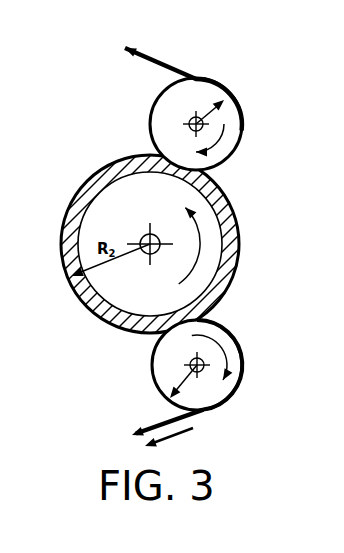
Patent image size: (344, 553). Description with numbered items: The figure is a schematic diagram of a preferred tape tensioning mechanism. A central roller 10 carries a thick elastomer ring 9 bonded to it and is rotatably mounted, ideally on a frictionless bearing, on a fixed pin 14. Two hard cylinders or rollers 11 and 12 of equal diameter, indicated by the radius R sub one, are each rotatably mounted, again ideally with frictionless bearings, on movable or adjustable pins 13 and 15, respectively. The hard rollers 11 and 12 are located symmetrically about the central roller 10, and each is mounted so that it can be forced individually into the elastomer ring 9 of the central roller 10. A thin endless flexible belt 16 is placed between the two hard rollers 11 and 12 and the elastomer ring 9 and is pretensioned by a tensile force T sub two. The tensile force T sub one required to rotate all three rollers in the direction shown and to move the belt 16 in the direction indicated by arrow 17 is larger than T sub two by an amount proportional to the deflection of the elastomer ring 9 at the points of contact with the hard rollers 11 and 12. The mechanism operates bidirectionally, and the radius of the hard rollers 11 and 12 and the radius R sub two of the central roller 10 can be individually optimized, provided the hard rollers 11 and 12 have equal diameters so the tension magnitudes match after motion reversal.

The elastomer ring 9 is at (88, 295).
The central roller 10 is at (115, 202).
The hard roller 11 is at (167, 105).
The hard roller 12 is at (160, 366).
The adjustable pin 13 is at (203, 118).
The fixed pin 14 is at (168, 237).
The adjustable pin 15 is at (203, 357).
The endless flexible belt 16 is at (203, 410).
The arrow indicating direction of belt motion 17 is at (187, 432).